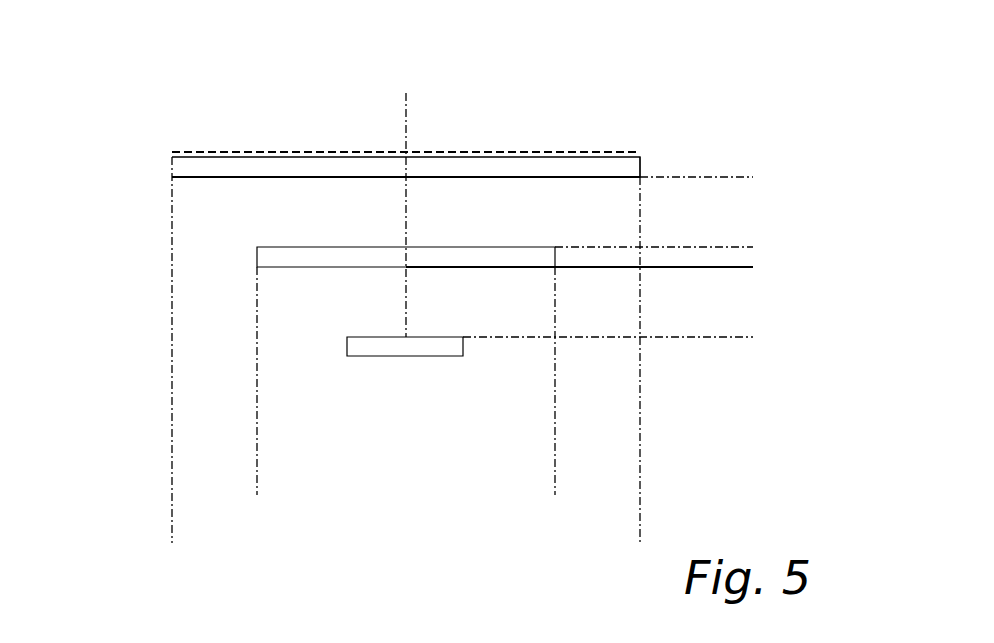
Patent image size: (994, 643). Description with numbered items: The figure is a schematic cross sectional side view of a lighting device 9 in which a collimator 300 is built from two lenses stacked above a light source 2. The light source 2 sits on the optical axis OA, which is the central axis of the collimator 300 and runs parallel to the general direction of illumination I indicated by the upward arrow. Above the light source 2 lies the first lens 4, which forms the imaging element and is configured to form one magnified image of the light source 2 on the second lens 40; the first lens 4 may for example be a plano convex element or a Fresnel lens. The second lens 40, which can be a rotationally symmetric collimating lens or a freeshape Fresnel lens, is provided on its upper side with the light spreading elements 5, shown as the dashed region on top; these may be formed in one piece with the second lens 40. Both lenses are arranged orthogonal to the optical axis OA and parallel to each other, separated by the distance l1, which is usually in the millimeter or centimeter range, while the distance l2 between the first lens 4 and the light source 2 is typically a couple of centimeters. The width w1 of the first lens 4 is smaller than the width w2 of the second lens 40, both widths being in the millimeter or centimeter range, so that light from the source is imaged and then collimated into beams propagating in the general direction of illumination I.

The light source 2 is at (392, 357).
The first lens 4 is at (323, 268).
The light spreading elements 5 is at (596, 146).
The lighting device 9 is at (703, 62).
The second lens 40 is at (177, 162).
The collimator 300 is at (79, 160).
The optical axis OA is at (407, 97).
The general direction of illumination I is at (367, 85).
The distance l1 is at (738, 180).
The distance l2 is at (738, 270).
The width of the first lens w1 is at (553, 462).
The width of the second lens w2 is at (638, 520).